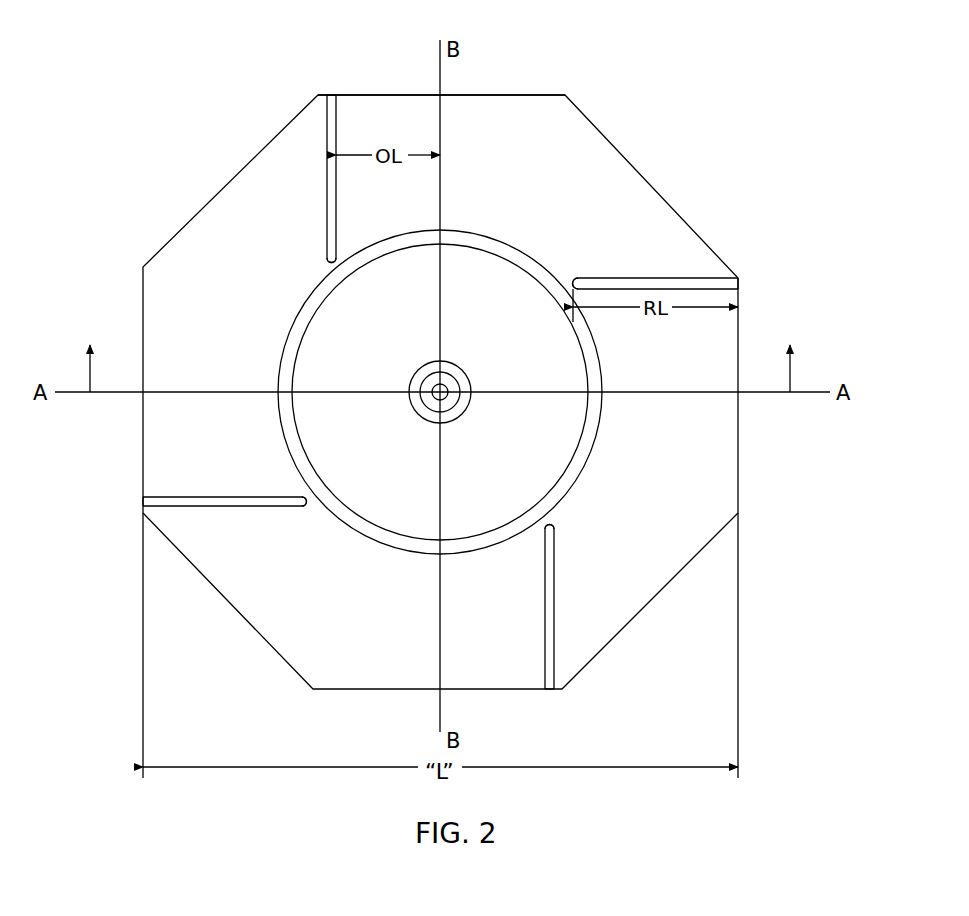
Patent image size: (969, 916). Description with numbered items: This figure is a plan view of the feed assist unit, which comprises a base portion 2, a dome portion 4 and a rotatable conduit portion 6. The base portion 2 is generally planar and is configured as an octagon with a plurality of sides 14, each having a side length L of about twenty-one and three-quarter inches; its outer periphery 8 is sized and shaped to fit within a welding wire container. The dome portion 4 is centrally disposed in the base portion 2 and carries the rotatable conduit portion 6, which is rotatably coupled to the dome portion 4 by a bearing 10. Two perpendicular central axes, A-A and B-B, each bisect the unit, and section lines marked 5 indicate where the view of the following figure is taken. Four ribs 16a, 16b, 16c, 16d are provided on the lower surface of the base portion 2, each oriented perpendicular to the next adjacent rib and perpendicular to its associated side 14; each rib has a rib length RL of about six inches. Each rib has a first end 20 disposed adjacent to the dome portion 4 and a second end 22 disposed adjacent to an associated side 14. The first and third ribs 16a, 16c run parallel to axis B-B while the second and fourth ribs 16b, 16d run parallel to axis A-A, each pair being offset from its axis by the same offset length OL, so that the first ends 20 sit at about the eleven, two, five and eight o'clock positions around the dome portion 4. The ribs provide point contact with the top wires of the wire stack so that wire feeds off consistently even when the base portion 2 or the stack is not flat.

The base portion 2 is at (615, 175).
The dome portion 4 is at (548, 438).
The section line 5 is at (440, 353).
The rotatable conduit portion 6 is at (449, 385).
The outer periphery 8 is at (470, 363).
The bearing 10 is at (462, 417).
The sides 14 is at (533, 95).
The first rib 16a is at (327, 172).
The second rib 16b is at (675, 278).
The third rib 16c is at (554, 601).
The fourth rib 16d is at (230, 497).
The first end 20 is at (327, 262).
The second end 22 is at (333, 95).